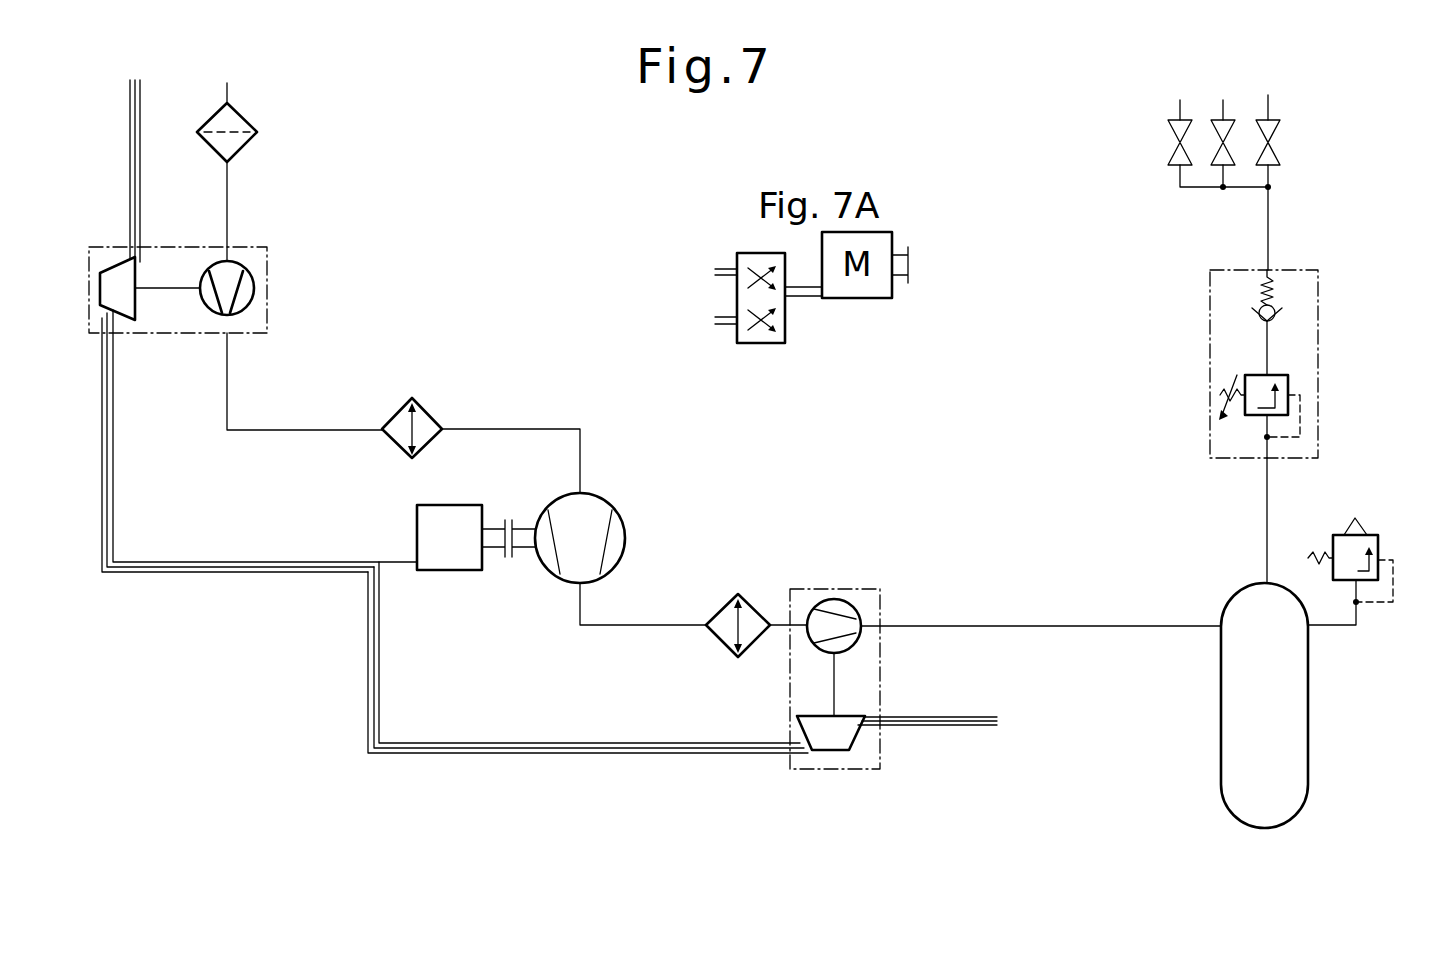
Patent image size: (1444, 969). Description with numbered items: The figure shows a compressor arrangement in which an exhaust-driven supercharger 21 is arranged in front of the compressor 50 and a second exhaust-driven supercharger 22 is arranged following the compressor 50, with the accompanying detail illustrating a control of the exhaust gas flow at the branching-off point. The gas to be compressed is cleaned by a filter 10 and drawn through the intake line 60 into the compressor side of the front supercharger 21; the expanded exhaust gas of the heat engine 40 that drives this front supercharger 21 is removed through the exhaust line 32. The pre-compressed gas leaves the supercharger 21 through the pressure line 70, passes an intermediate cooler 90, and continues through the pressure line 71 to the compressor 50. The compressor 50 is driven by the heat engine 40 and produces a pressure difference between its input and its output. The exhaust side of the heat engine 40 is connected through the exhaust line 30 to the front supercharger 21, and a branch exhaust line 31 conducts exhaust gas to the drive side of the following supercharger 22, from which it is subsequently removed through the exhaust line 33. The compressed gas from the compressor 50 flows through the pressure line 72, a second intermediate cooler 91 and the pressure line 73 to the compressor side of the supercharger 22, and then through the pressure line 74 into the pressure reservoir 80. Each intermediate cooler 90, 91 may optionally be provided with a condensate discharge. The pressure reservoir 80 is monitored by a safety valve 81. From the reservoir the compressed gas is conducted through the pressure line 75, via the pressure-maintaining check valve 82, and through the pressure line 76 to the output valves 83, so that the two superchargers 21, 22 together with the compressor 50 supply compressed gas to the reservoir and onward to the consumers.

The filter 10 is at (253, 139).
The intake line 60 is at (227, 207).
The exhaust line 32 is at (129, 148).
The exhaust-driven supercharger 21 is at (254, 288).
The exhaust line 30 is at (232, 562).
The exhaust line 31 is at (550, 743).
The pressure line 70 is at (253, 430).
The intermediate cooler 90 is at (400, 397).
The pressure line 71 is at (513, 430).
The heat engine 40 is at (458, 505).
The compressor 50 is at (625, 538).
The pressure line 72 is at (640, 626).
The intermediate cooler 91 is at (735, 597).
The pressure line 73 is at (773, 622).
The exhaust-driven supercharger 22 is at (835, 589).
The pressure line 74 is at (963, 626).
The exhaust line 33 is at (963, 717).
The output valves 83 is at (1276, 132).
The pressure line 76 is at (1268, 215).
The pressure-maintaining check valve 82 is at (1290, 378).
The pressure line 75 is at (1268, 505).
The pressure reservoir 80 is at (1308, 728).
The safety valve 81 is at (1380, 562).